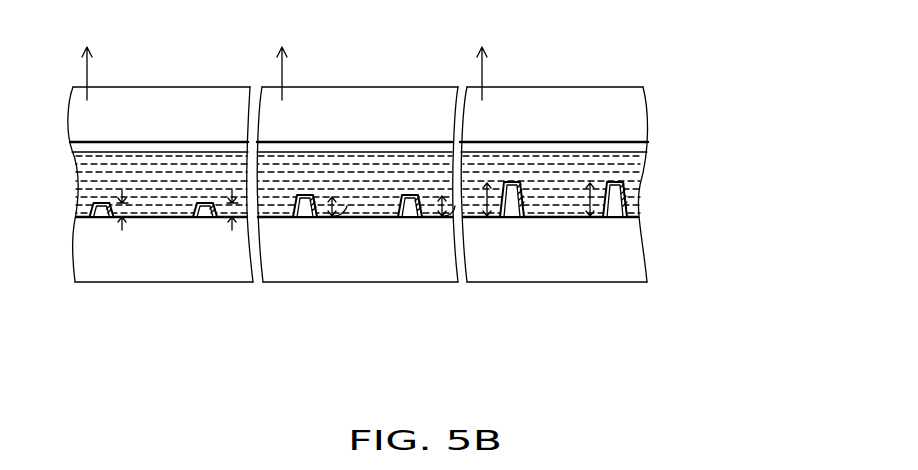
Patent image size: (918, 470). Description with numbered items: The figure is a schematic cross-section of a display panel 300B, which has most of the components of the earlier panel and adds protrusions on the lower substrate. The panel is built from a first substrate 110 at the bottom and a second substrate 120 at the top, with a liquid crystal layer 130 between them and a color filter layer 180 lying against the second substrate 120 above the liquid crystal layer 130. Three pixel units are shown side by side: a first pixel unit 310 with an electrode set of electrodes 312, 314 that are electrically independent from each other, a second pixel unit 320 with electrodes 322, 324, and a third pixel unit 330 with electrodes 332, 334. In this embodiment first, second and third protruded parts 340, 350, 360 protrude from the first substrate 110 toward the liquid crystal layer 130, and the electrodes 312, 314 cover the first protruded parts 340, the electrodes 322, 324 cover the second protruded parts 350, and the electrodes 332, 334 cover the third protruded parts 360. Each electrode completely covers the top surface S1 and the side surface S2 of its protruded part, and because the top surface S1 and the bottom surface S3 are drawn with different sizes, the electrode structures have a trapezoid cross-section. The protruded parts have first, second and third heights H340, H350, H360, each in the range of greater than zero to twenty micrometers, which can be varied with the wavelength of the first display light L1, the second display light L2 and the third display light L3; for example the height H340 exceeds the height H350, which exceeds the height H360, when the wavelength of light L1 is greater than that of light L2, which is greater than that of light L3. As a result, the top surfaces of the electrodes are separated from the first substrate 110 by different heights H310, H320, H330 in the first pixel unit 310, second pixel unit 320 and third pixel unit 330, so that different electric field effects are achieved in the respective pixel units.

The first substrate 110 is at (627, 270).
The second substrate 120 is at (628, 105).
The liquid crystal layer 130 is at (640, 166).
The color filter layer 180 is at (652, 146).
The first pixel unit 310 is at (602, 43).
The electrode 312 is at (512, 182).
The electrode 314 is at (615, 182).
The second pixel unit 320 is at (402, 43).
The electrode 322 is at (307, 195).
The electrode 324 is at (408, 195).
The third pixel unit 330 is at (205, 43).
The electrode 332 is at (104, 203).
The electrode 334 is at (210, 204).
The first protruded part 340 is at (513, 218).
The second protruded part 350 is at (307, 218).
The third protruded part 360 is at (95, 215).
The first height H310 is at (590, 218).
The second height H320 is at (442, 218).
The third height H330 is at (232, 230).
The first height H340 is at (487, 218).
The second height H350 is at (332, 218).
The third height H360 is at (122, 230).
The top surface S1 is at (633, 198).
The side surface S2 is at (630, 207).
The bottom surface S3 is at (619, 211).
The first display light L1 is at (477, 70).
The second display light L2 is at (278, 70).
The third display light L3 is at (82, 70).
The display panel 300B is at (768, 380).